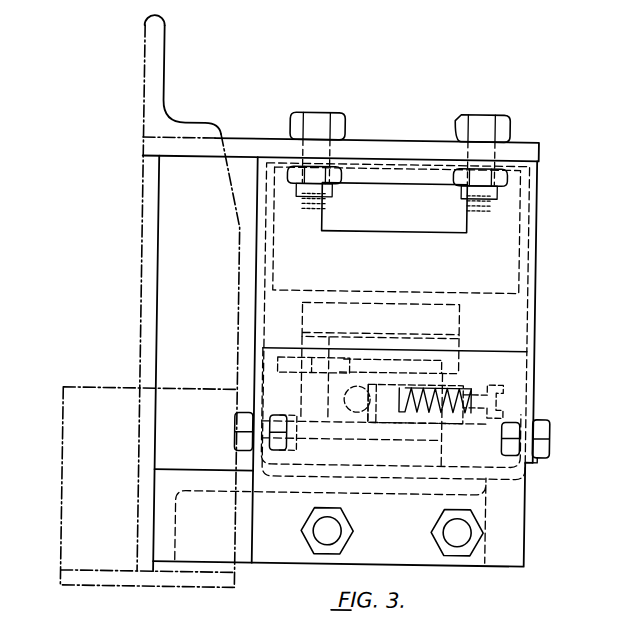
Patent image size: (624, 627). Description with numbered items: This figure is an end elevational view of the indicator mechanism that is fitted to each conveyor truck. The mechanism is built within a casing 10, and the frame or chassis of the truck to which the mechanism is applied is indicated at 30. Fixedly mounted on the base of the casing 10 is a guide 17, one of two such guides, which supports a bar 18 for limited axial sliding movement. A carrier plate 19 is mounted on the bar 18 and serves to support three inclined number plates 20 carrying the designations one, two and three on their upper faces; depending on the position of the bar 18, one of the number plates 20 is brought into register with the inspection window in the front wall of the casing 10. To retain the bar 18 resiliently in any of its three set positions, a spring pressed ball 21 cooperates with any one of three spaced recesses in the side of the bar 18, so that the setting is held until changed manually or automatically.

The casing 10 is at (256, 290).
The guide 17 is at (266, 370).
The bar 18 is at (316, 395).
The carrier plate 19 is at (468, 328).
The number plates 20 is at (469, 305).
The spring pressed ball 21 is at (381, 379).
The frame or chassis of a truck 30 is at (117, 393).